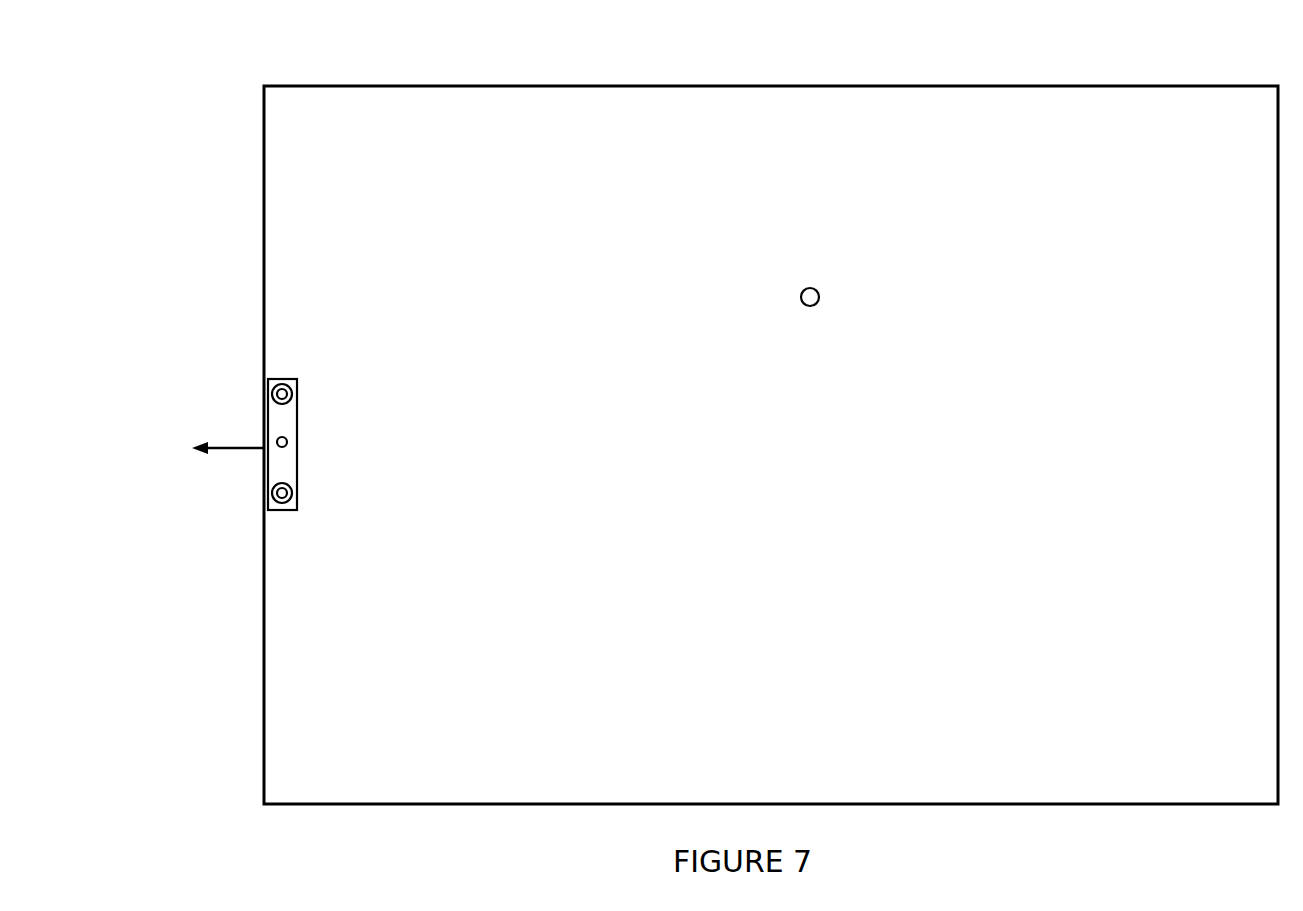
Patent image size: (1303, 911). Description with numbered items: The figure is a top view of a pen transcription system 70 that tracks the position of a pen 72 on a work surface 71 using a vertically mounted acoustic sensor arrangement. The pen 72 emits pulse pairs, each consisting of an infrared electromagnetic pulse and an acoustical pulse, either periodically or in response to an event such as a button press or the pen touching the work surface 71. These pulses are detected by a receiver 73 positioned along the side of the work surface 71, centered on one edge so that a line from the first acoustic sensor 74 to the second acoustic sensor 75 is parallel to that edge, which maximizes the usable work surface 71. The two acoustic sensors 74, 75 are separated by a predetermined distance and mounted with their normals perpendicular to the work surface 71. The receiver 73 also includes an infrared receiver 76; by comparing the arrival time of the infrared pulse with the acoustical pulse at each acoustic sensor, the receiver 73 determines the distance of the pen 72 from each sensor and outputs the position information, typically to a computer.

The pen transcription system 70 is at (118, 109).
The work surface 71 is at (793, 607).
The pen 72 is at (815, 289).
The receiver 73 is at (297, 413).
The first acoustic sensor 74 is at (282, 384).
The second acoustic sensor 75 is at (284, 502).
The infrared receiver 76 is at (287, 440).